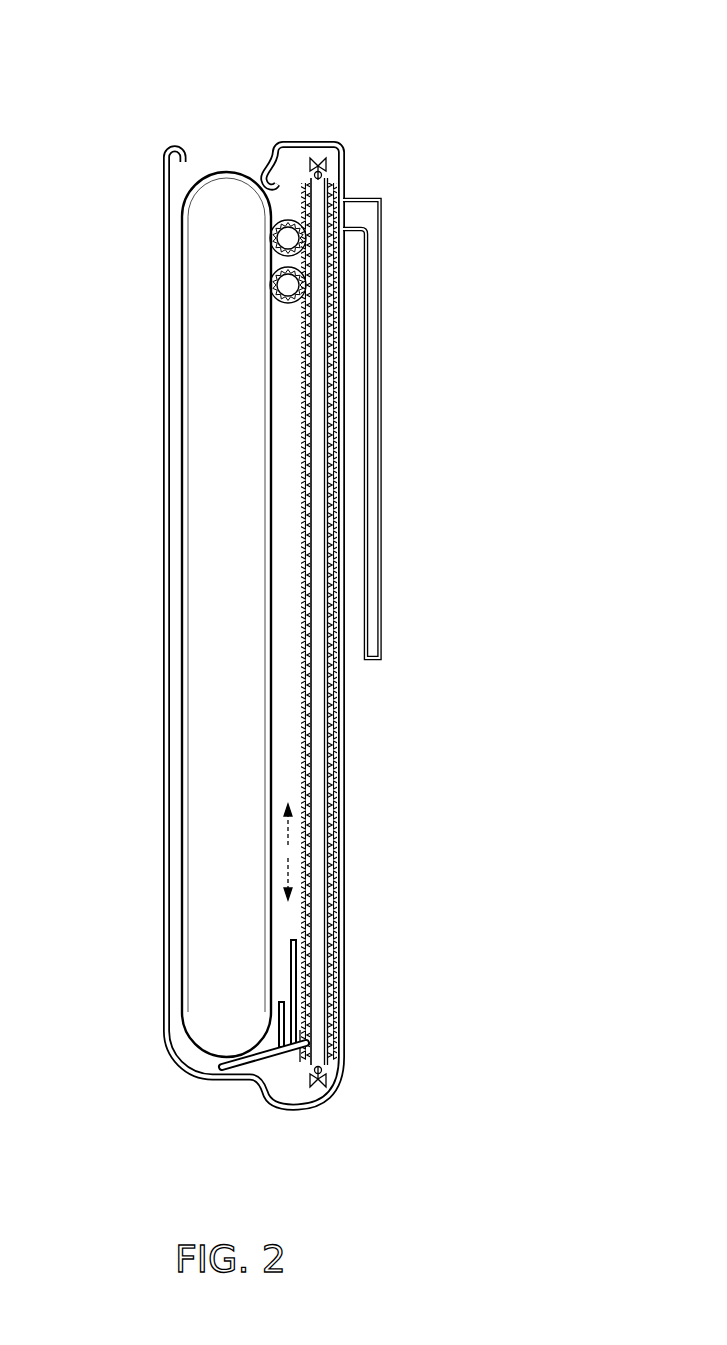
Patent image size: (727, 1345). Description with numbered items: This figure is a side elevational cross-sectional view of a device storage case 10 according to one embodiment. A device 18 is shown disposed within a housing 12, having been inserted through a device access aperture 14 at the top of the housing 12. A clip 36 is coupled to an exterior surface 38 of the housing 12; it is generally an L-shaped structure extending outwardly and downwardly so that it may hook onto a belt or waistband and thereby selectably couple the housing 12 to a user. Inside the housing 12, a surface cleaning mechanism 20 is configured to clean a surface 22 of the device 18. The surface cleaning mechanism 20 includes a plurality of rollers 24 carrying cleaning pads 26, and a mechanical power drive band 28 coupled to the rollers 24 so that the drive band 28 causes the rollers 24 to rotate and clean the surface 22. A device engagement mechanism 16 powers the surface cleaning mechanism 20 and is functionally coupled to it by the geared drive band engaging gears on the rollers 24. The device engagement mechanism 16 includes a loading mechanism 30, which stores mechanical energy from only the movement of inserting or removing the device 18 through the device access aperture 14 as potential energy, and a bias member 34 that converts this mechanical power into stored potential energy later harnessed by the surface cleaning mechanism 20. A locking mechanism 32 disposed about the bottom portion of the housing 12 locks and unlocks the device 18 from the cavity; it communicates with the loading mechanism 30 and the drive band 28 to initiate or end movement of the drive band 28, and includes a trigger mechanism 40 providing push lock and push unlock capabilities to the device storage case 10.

The device storage case 10 is at (371, 83).
The housing 12 is at (162, 488).
The device access aperture 14 is at (219, 131).
The device engagement mechanism 16 is at (293, 1069).
The device 18 is at (244, 589).
The surface cleaning mechanism 20 is at (257, 289).
The surface 22 is at (272, 762).
The rollers 24 is at (312, 200).
The cleaning pads 26 is at (275, 243).
The mechanical power drive band 28 is at (312, 336).
The loading mechanism 30 is at (252, 1068).
The locking mechanism 32 is at (303, 1028).
The bias member 34 is at (308, 962).
The clip 36 is at (382, 452).
The exterior surface 38 is at (343, 713).
The trigger mechanism 40 is at (282, 1013).